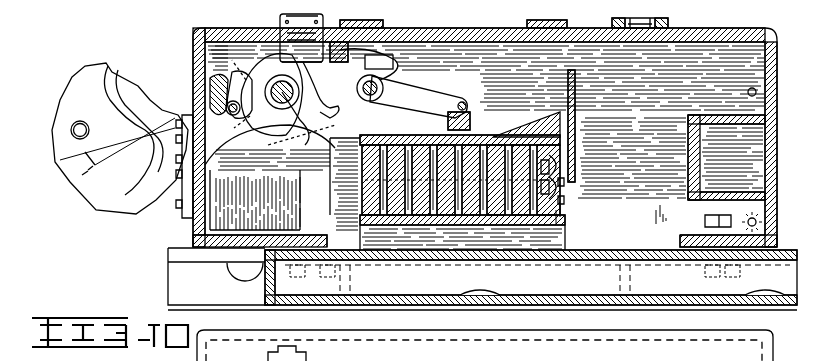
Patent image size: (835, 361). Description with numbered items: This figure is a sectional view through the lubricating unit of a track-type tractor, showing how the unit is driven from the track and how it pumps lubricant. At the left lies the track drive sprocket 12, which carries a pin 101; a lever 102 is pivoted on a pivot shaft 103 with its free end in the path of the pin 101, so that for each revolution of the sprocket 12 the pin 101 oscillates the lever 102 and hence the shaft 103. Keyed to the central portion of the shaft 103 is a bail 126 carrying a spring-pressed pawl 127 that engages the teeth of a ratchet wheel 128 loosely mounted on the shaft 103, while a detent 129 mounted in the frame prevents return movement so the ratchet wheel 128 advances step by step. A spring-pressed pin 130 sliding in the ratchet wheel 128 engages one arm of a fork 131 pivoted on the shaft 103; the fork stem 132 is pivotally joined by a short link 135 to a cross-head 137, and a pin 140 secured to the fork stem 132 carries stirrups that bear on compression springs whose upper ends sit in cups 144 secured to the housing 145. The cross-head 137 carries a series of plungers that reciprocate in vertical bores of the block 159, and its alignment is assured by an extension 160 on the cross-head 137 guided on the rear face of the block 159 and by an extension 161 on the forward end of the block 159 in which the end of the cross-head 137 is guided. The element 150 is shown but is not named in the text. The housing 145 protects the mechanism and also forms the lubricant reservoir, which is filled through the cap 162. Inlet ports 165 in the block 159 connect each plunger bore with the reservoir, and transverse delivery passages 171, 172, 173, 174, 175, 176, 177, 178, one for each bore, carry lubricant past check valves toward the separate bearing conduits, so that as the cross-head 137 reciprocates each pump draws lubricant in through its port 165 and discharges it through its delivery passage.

The track drive sprocket 12 is at (82, 78).
The pin 101 is at (80, 133).
The lever 102 is at (79, 171).
The pivot shaft 103 is at (290, 118).
The bail 126 is at (226, 112).
The spring-pressed pawl 127 is at (233, 78).
The ratchet wheel 128 is at (263, 72).
The detent 129 is at (320, 140).
The pin 130 is at (312, 79).
The fork 131 is at (350, 50).
The fork stem 132 is at (432, 106).
The short link 135 is at (470, 118).
The cross-head 137 is at (552, 132).
The pin 140 is at (380, 88).
The cups 144 is at (392, 69).
The housing 145 is at (192, 232).
The cover plate 150 is at (302, 39).
The block 159 is at (360, 217).
The extension 160 is at (360, 202).
The extension 161 is at (575, 142).
The cap 162 is at (668, 22).
The inlet ports 165 is at (560, 200).
The delivery passage 171 is at (371, 215).
The delivery passage 172 is at (396, 215).
The delivery passage 173 is at (421, 215).
The delivery passage 174 is at (446, 215).
The delivery passage 175 is at (471, 215).
The delivery passage 176 is at (496, 215).
The delivery passage 177 is at (521, 215).
The delivery passage 178 is at (560, 212).